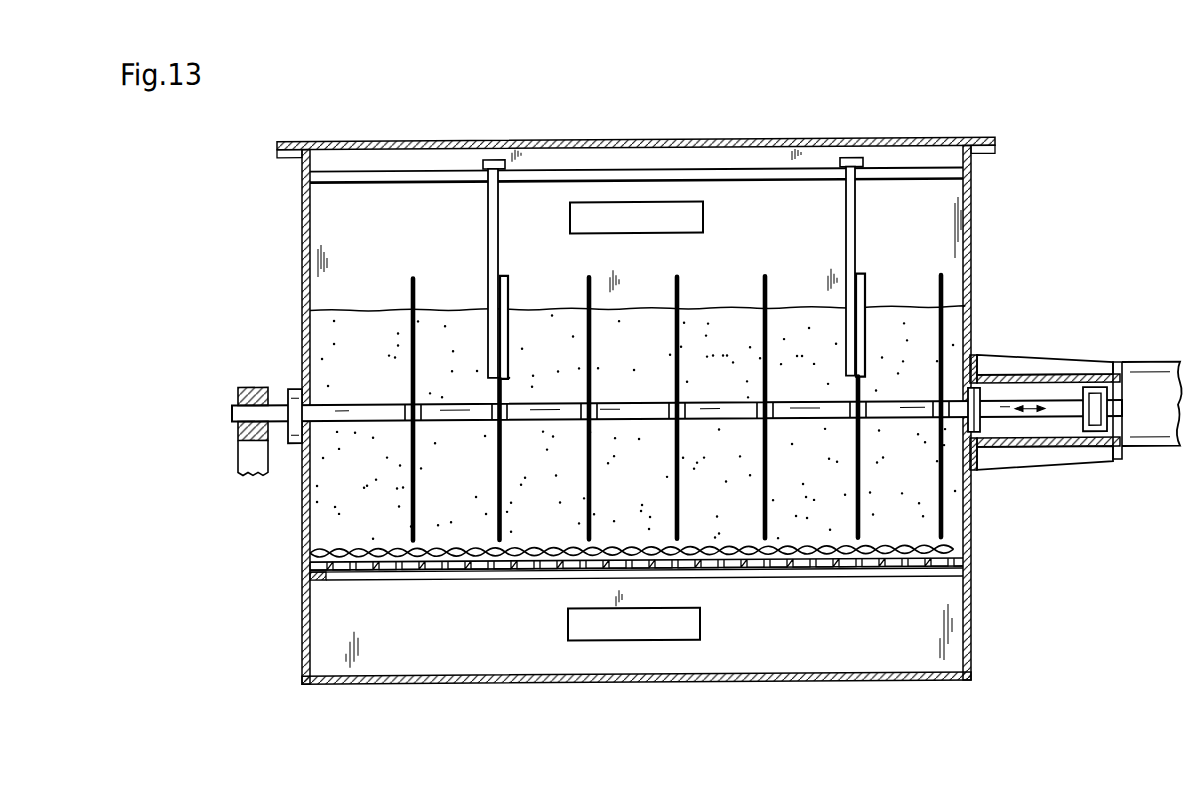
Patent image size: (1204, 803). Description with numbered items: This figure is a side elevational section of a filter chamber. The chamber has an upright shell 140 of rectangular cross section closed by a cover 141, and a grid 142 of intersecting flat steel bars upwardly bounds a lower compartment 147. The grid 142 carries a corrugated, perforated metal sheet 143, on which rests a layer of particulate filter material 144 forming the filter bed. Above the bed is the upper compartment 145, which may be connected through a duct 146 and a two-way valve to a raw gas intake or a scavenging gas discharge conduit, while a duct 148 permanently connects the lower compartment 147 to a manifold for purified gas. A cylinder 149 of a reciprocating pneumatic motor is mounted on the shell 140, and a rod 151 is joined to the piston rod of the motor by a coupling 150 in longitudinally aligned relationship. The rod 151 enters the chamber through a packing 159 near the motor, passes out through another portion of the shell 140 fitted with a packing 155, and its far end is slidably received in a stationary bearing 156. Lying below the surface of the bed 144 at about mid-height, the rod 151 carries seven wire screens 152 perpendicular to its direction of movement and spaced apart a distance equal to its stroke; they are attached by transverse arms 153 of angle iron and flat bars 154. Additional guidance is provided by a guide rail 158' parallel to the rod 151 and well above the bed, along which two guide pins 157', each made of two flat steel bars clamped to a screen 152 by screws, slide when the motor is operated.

The upright shell 140 is at (971, 221).
The cover 141 is at (906, 139).
The grid 142 is at (952, 576).
The corrugated, perforated metal sheet 143 is at (952, 550).
The layer of particulate filter material 144 is at (929, 325).
The upper compartment 145 is at (647, 158).
The duct 146 is at (570, 219).
The lower compartment 147 is at (808, 664).
The duct 148 is at (568, 632).
The cylinder 149 is at (1152, 449).
The coupling 150 is at (1098, 396).
The rod 151 is at (1061, 419).
The wire screens 152 is at (936, 283).
The transverse arms 153 is at (404, 403).
The flat bars 154 is at (421, 420).
The packing 155 is at (297, 390).
The stationary bearing 156 is at (238, 388).
The guide pins 157' is at (685, 241).
The guide rail 158' is at (636, 202).
The packing 159 is at (982, 432).